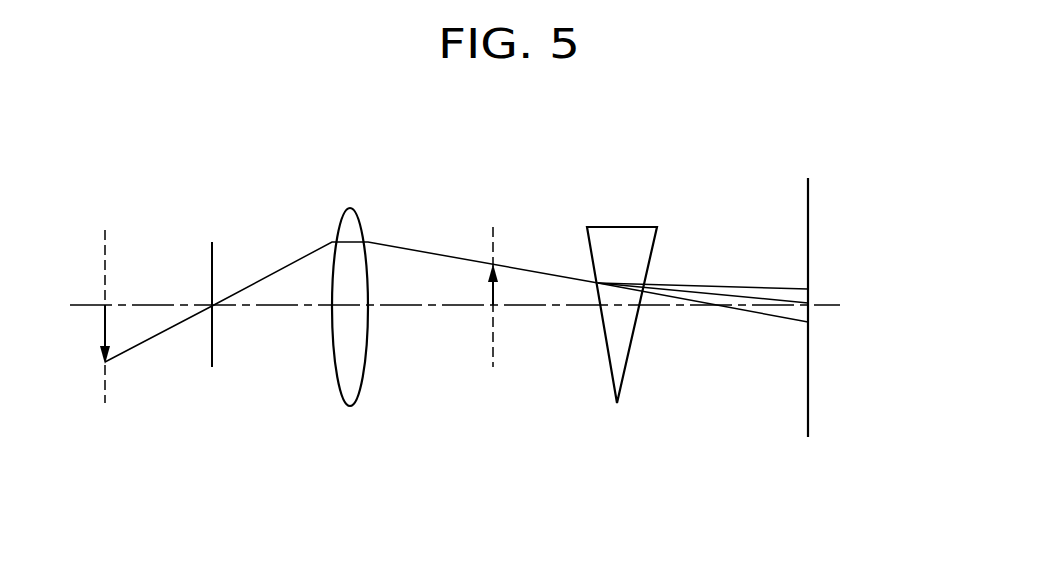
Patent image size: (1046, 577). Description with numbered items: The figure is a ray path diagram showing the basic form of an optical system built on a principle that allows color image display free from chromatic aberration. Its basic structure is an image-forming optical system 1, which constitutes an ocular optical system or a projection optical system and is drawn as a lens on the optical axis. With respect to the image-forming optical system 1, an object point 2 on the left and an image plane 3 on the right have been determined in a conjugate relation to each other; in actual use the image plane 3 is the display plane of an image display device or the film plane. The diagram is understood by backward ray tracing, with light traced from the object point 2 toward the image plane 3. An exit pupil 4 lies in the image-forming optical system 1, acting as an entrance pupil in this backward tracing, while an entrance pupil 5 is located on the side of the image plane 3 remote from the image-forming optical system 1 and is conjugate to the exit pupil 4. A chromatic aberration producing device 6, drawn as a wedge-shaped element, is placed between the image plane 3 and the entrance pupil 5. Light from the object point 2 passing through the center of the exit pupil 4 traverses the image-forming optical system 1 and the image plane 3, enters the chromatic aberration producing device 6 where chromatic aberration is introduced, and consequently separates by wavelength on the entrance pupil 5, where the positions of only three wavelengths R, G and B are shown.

The image-forming optical system 1 is at (378, 340).
The object point 2 is at (120, 351).
The image plane 3 is at (510, 314).
The exit pupil 4 is at (221, 335).
The entrance pupil 5 is at (832, 337).
The chromatic aberration producing device 6 is at (649, 284).
The wavelength B is at (814, 285).
The wavelength G is at (814, 299).
The wavelength R is at (814, 326).